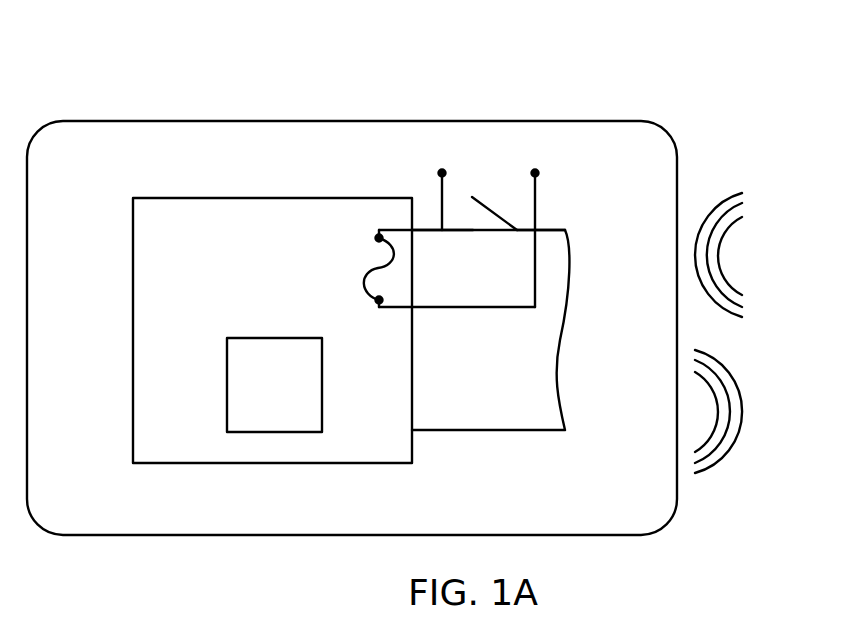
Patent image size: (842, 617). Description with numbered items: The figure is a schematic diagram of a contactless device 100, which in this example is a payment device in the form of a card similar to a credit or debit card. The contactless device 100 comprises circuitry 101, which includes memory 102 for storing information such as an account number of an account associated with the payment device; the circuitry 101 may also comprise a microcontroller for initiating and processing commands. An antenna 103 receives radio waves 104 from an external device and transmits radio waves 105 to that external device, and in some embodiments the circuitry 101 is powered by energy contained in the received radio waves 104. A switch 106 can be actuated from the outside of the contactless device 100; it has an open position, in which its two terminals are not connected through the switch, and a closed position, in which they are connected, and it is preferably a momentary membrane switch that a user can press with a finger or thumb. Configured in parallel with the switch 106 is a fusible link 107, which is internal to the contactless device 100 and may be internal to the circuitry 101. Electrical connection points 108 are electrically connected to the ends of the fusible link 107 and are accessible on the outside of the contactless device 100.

The contactless device 100 is at (598, 120).
The circuitry 101 is at (216, 197).
The memory 102 is at (268, 430).
The antenna 103 is at (572, 232).
The radio waves 104 is at (732, 190).
The radio waves 105 is at (732, 373).
The switch 106 is at (483, 205).
The fusible link 107 is at (375, 268).
The electrical connection points 108 is at (443, 162).